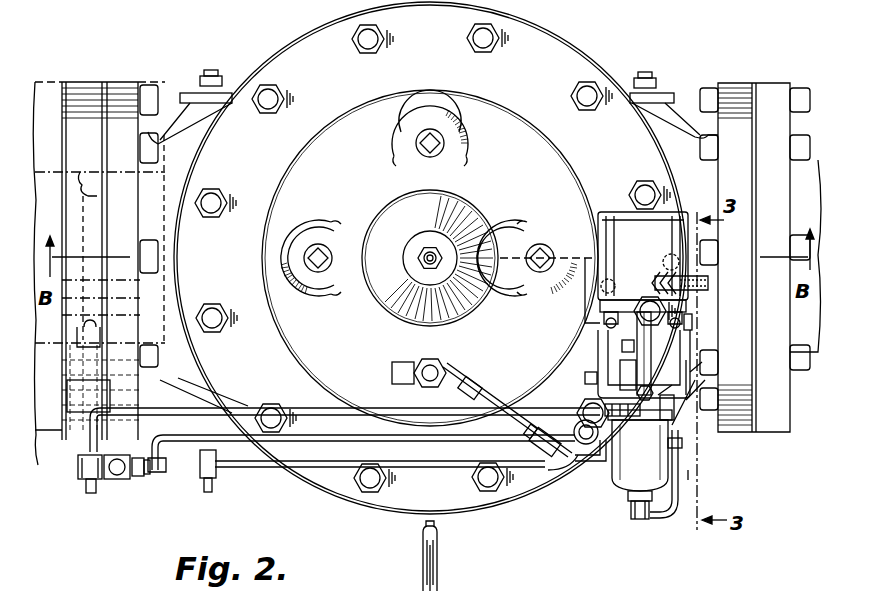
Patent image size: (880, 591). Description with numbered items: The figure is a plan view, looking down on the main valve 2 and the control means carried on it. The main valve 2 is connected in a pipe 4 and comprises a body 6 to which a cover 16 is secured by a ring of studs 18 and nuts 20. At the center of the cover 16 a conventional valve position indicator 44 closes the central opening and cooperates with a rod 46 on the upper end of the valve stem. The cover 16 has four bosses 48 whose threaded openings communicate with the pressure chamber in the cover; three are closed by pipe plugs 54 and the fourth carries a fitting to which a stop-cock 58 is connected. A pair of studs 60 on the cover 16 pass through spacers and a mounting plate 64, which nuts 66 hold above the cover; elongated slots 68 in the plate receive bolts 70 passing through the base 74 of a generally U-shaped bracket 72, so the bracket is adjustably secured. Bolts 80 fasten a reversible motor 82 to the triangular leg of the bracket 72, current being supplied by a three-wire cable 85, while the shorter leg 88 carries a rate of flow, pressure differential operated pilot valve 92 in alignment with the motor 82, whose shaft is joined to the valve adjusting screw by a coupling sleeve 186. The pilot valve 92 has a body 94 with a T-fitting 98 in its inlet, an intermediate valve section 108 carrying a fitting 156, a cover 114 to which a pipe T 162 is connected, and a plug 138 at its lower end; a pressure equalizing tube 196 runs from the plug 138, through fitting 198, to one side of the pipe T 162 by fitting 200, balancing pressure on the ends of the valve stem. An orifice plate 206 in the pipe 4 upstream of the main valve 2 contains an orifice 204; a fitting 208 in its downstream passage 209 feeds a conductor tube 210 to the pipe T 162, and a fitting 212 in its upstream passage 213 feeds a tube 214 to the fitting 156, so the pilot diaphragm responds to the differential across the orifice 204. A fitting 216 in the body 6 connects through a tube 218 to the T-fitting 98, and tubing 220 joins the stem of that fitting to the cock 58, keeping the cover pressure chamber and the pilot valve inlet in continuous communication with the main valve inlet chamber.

The main valve 2 is at (430, 258).
The pipe 4 is at (48, 85).
The body 6 is at (667, 135).
The cover 16 is at (569, 54).
The studs 18 is at (266, 108).
The nuts 20 is at (385, 43).
The valve position indicator 44 is at (427, 248).
The rod 46 is at (437, 566).
The bosses 48 is at (397, 135).
The pipe plugs 54 is at (421, 153).
The stop-cock 58 is at (402, 364).
The studs 60 is at (666, 258).
The mounting plate 64 is at (598, 350).
The nuts 66 is at (673, 252).
The elongated slots 68 is at (622, 357).
The bolts 70 is at (600, 325).
The bracket 72 is at (702, 362).
The base 74 is at (590, 380).
The bolts 80 is at (690, 320).
The reversible motor 82 is at (600, 212).
The 3-wire cable 85 is at (710, 283).
The leg 88 is at (661, 386).
The pilot valve 92 is at (690, 478).
The body 94 is at (617, 492).
The fitting 98 is at (563, 490).
The intermediate valve section 108 is at (640, 450).
The cover 114 is at (626, 403).
The plug 138 is at (627, 508).
The fitting 156 is at (594, 446).
The pipe T 162 is at (677, 426).
The coupling sleeve 186 is at (628, 345).
The pressure equalizing tube 196 is at (669, 520).
The fitting 198 is at (637, 519).
The fitting 200 is at (682, 446).
The orifice 204 is at (92, 190).
The orifice plate 206 is at (88, 92).
The fitting 208 is at (108, 437).
The passage 209 is at (100, 382).
The conductor tube 210 is at (246, 406).
The fitting 212 is at (72, 468).
The passage 213 is at (88, 387).
The tube 214 is at (288, 432).
The fitting 216 is at (173, 472).
The tube 218 is at (233, 469).
The tubing 220 is at (479, 396).